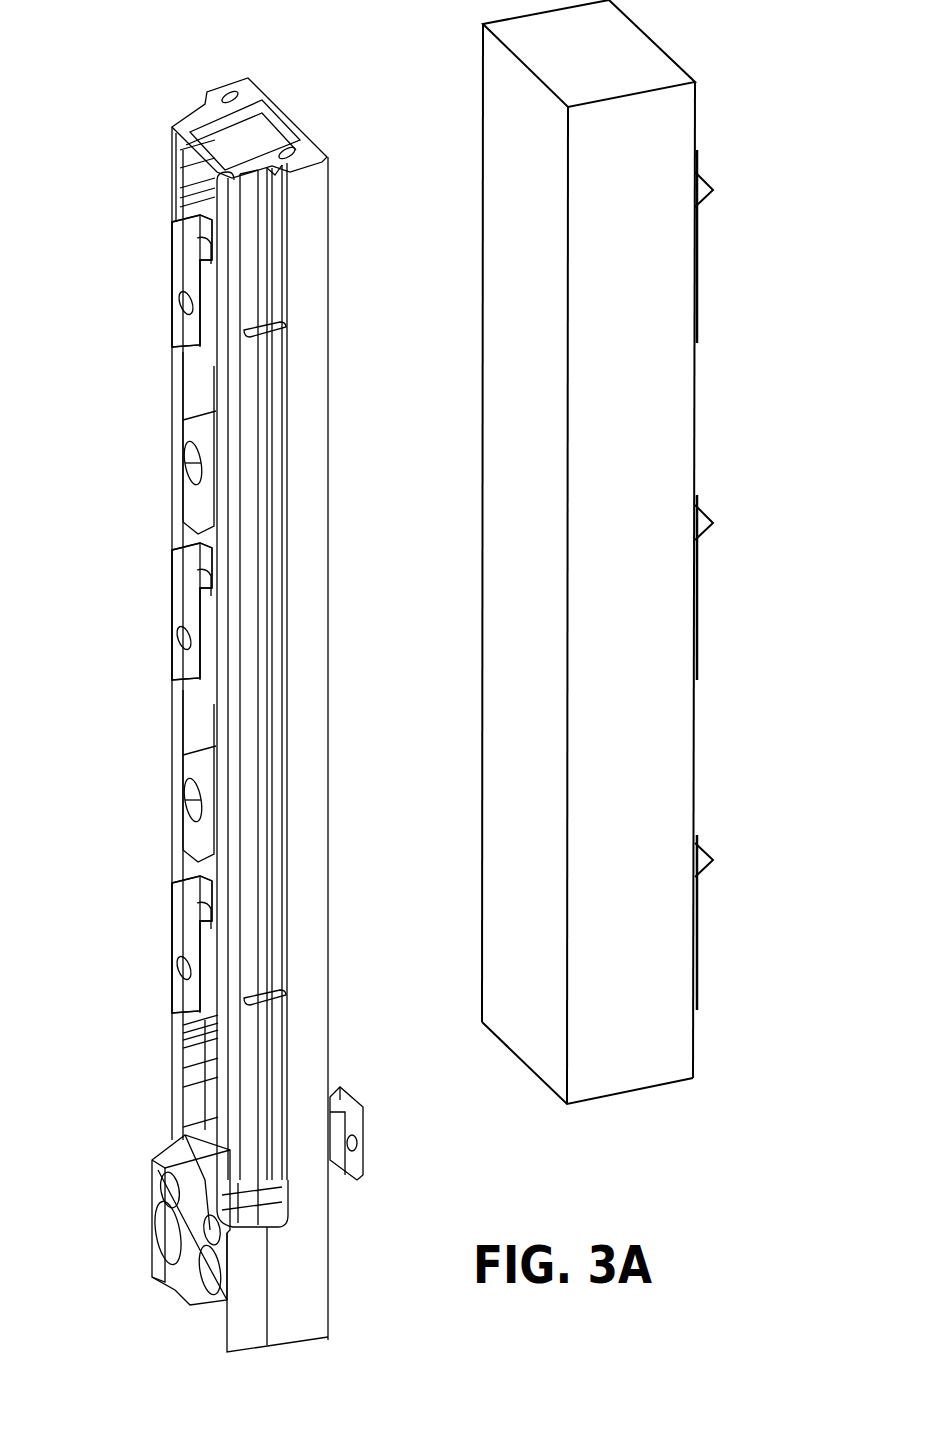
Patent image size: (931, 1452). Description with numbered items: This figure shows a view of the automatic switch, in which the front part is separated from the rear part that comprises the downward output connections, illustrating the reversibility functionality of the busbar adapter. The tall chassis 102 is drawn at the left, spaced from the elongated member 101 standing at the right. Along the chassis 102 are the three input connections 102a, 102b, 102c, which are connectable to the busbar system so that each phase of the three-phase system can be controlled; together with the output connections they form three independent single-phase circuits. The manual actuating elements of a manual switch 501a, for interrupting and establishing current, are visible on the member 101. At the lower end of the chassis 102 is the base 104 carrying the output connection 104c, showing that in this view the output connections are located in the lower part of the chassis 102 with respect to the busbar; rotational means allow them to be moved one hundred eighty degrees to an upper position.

The pole / mounting member 101 is at (662, 137).
The manual switch 501a is at (700, 195).
The chassis 102 is at (305, 255).
The input connection 102a is at (185, 268).
The input connection 102b is at (185, 598).
The input connection 102c is at (185, 930).
The base housing 104 is at (245, 1310).
The output connection 104c is at (365, 1155).